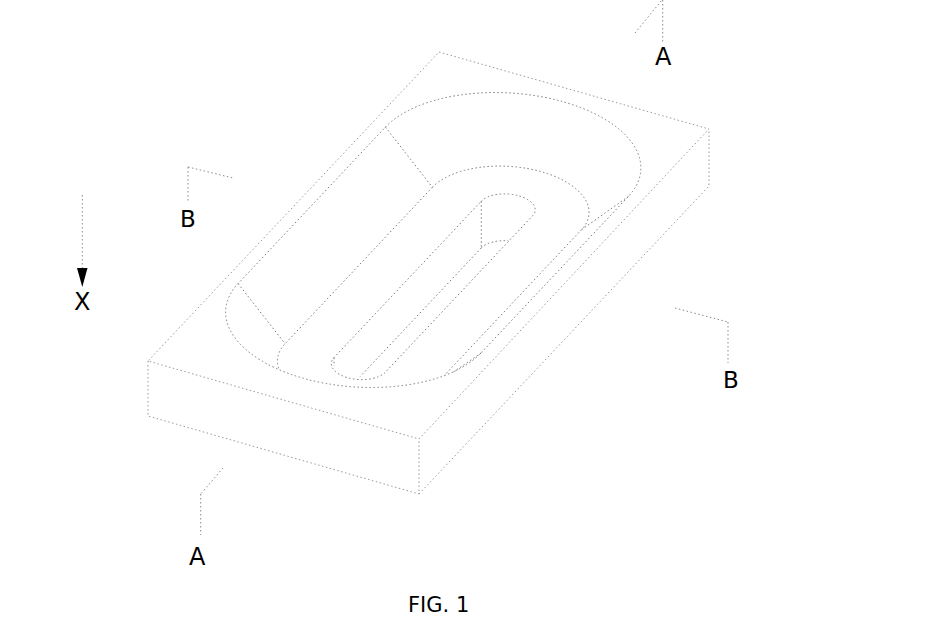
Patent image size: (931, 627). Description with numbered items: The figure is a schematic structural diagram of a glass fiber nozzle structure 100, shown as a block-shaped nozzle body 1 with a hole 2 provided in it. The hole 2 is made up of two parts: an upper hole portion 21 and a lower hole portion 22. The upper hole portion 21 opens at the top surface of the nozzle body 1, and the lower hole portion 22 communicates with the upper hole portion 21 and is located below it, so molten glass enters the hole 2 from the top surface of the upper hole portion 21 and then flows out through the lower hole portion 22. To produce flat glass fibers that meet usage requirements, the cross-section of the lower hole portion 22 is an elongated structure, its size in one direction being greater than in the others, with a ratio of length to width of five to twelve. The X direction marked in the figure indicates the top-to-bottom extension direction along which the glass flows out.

The glass fiber nozzle structure 100 is at (789, 46).
The nozzle body 1 is at (442, 446).
The hole 2 is at (776, 184).
The upper hole portion 21 is at (610, 189).
The lower hole portion 22 is at (500, 233).